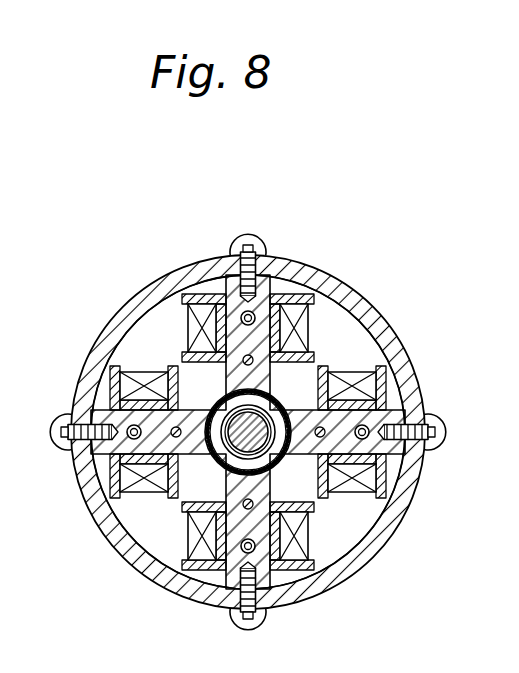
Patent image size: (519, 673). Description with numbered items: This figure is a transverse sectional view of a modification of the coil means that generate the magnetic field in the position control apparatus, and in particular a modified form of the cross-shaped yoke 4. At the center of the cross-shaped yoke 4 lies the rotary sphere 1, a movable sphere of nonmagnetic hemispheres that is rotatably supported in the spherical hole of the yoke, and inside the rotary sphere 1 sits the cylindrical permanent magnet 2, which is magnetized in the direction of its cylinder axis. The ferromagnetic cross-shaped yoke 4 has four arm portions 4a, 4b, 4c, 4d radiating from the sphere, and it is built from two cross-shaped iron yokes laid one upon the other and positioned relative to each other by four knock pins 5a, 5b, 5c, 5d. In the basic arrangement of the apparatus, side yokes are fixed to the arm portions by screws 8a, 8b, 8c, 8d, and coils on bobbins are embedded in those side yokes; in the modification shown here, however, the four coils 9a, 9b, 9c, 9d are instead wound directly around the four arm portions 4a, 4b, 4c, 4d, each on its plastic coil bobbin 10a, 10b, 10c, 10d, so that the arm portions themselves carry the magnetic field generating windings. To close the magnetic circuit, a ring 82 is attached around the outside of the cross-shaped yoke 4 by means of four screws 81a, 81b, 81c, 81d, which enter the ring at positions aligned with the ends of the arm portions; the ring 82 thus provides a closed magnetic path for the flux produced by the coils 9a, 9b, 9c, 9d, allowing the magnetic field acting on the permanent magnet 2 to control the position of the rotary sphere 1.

The rotary sphere 1 is at (130, 538).
The cylindrical permanent magnet 2 is at (340, 362).
The cross-shaped yoke 4 is at (430, 575).
The arm portion 4a is at (430, 427).
The arm portion 4b is at (240, 290).
The arm portion 4c is at (80, 420).
The arm portion 4d is at (237, 572).
The knock pin 5a is at (380, 514).
The knock pin 5b is at (190, 332).
The knock pin 5c is at (135, 497).
The knock pin 5d is at (310, 540).
The screw 8a is at (368, 438).
The screw 8b is at (243, 313).
The screw 8c is at (127, 438).
The screw 8d is at (255, 550).
The coil 9a is at (386, 388).
The coil 9b is at (310, 323).
The coil 9c is at (138, 367).
The coil 9d is at (190, 547).
The coil bobbin 10a is at (380, 404).
The coil bobbin 10b is at (305, 296).
The coil bobbin 10c is at (116, 373).
The coil bobbin 10d is at (197, 570).
The screw 81a is at (437, 450).
The screw 81b is at (258, 240).
The screw 81c is at (56, 420).
The screw 81d is at (236, 626).
The ring 82 is at (365, 330).